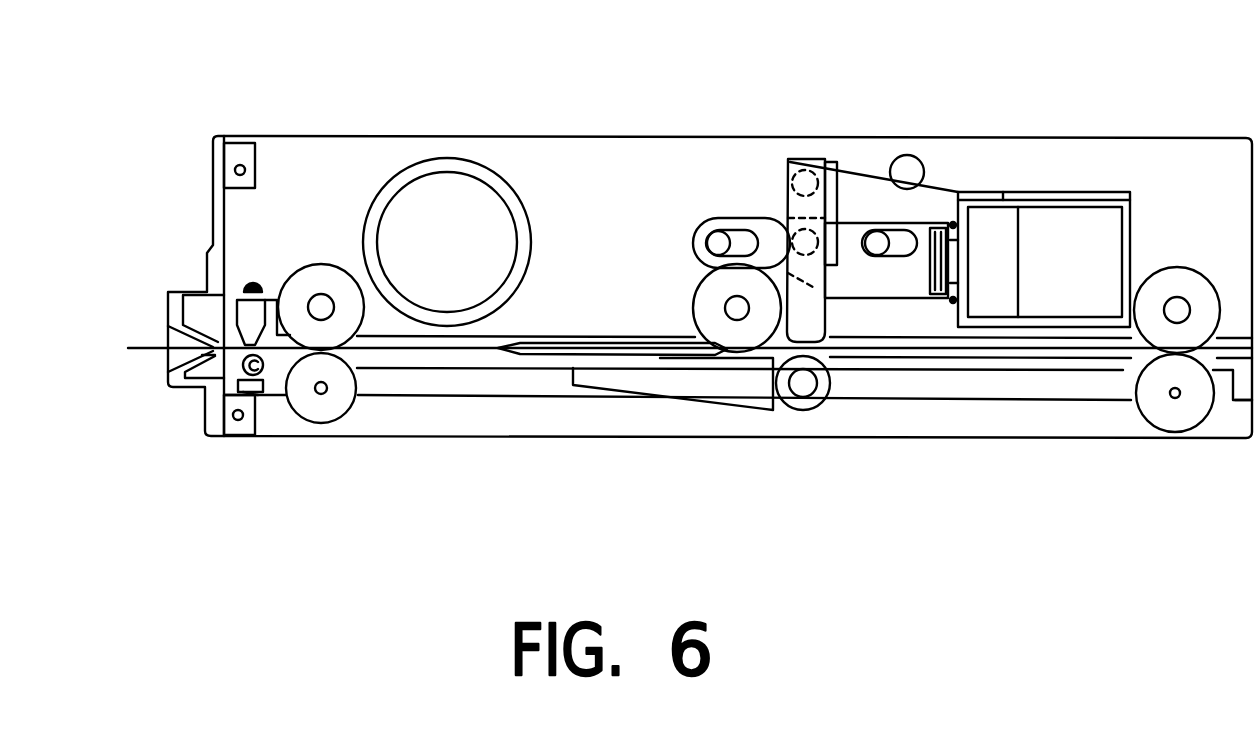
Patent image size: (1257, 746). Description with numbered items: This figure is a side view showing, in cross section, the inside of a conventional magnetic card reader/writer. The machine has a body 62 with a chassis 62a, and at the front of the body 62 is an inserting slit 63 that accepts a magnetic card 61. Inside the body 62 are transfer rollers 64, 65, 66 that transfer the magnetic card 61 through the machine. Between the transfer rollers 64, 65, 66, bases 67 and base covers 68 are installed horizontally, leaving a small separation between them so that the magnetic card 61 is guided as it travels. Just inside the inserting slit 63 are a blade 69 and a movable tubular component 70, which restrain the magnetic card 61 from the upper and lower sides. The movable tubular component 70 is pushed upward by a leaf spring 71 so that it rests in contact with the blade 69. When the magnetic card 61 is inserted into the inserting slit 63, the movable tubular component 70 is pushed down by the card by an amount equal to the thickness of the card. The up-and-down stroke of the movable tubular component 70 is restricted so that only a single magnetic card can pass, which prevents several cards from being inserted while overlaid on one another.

The magnetic card 61 is at (140, 347).
The body 62 is at (787, 137).
The chassis of the body 62a is at (620, 165).
The inserting slit 63 is at (167, 330).
The transfer roller 64 is at (333, 273).
The transfer roller 65 is at (738, 333).
The transfer roller 66 is at (1153, 327).
The base 67 is at (473, 358).
The base cover 68 is at (530, 337).
The blade 69 is at (253, 320).
The movable tubular component 70 is at (263, 368).
The leaf spring 71 is at (247, 393).